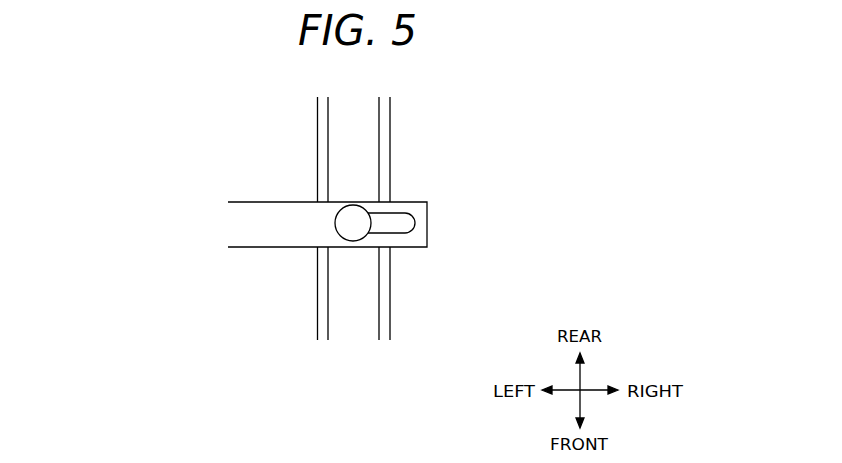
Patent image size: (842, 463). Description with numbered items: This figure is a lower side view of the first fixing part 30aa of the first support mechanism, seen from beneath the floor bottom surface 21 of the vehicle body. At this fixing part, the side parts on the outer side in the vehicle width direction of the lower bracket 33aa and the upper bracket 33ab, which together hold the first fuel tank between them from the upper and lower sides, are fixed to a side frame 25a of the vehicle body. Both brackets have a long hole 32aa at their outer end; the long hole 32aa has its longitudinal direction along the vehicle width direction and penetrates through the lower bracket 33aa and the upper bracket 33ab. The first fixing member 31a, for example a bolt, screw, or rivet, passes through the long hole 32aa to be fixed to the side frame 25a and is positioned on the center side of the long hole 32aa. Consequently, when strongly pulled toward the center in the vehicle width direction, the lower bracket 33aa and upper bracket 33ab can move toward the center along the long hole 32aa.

The floor bottom surface 21 is at (287, 320).
The side frame 25a is at (365, 300).
The first fixing part 30aa is at (440, 222).
The first fixing member 31a is at (353, 223).
The long hole 32aa is at (413, 216).
The lower bracket 33aa is at (188, 201).
The upper bracket 33ab is at (277, 220).